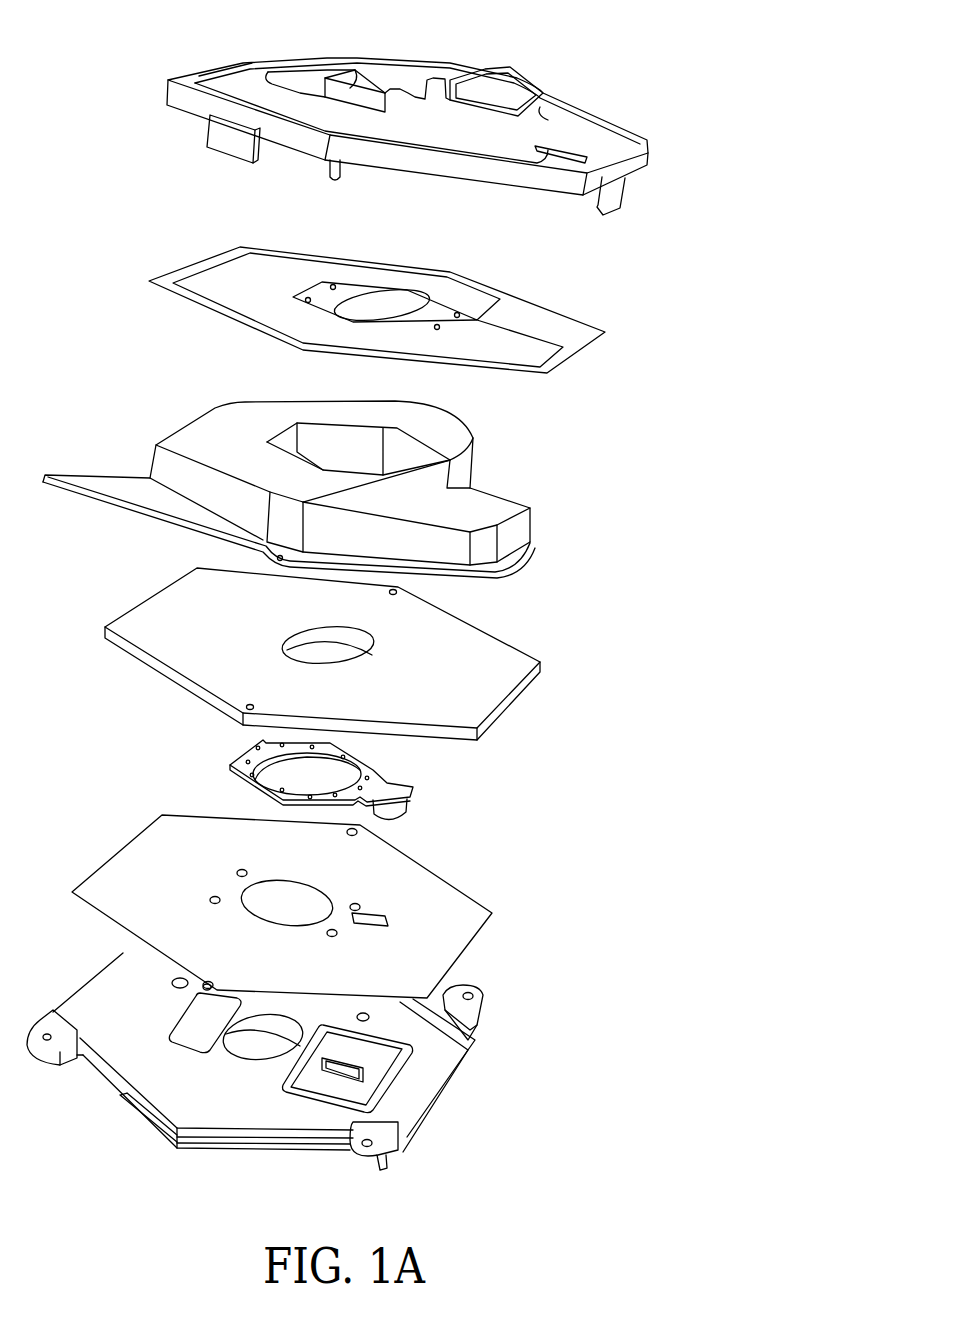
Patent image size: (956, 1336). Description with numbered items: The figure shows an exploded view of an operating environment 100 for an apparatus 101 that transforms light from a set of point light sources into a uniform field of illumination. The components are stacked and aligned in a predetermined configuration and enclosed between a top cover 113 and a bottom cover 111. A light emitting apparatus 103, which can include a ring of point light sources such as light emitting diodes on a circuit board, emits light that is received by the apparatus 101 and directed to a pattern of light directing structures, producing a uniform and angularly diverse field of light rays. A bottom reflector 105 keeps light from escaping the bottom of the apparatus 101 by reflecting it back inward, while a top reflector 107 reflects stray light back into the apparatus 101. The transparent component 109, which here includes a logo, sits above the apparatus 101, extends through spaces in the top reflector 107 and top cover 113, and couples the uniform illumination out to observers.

The operating environment 100 is at (706, 50).
The apparatus 101 is at (468, 622).
The light emitting apparatus 103 is at (392, 780).
The bottom reflector 105 is at (425, 867).
The top reflector 107 is at (528, 300).
The transparent component 109 is at (447, 415).
The bottom cover 111 is at (435, 1103).
The top cover 113 is at (447, 62).